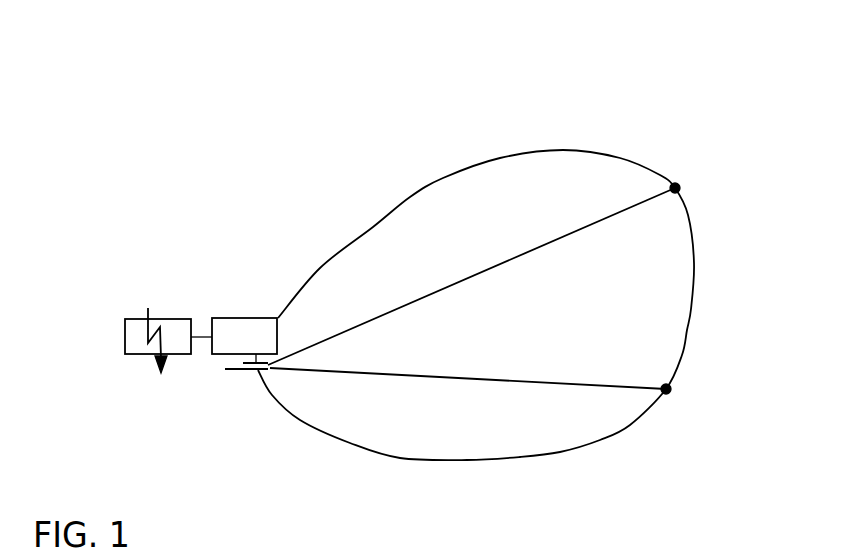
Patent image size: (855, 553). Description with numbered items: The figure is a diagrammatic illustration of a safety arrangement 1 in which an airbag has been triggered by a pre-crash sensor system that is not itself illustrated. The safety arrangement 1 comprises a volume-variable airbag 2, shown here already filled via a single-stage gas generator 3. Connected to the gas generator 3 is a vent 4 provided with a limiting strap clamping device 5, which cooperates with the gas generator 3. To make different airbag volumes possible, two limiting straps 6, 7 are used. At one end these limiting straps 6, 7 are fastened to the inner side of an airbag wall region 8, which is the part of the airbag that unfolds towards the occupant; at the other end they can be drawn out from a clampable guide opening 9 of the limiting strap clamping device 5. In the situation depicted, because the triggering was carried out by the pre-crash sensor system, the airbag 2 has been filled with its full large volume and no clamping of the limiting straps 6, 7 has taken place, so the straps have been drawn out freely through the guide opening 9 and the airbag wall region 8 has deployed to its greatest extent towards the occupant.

The safety arrangement 1 is at (464, 118).
The volume-variable airbag 2 is at (538, 165).
The single-stage gas generator 3 is at (175, 328).
The vent 4 is at (249, 329).
The limiting strap clamping device 5 is at (248, 390).
The limiting strap 6 is at (539, 384).
The limiting strap 7 is at (622, 209).
The airbag wall region 8 is at (693, 308).
The clampable guide opening 9 is at (218, 378).